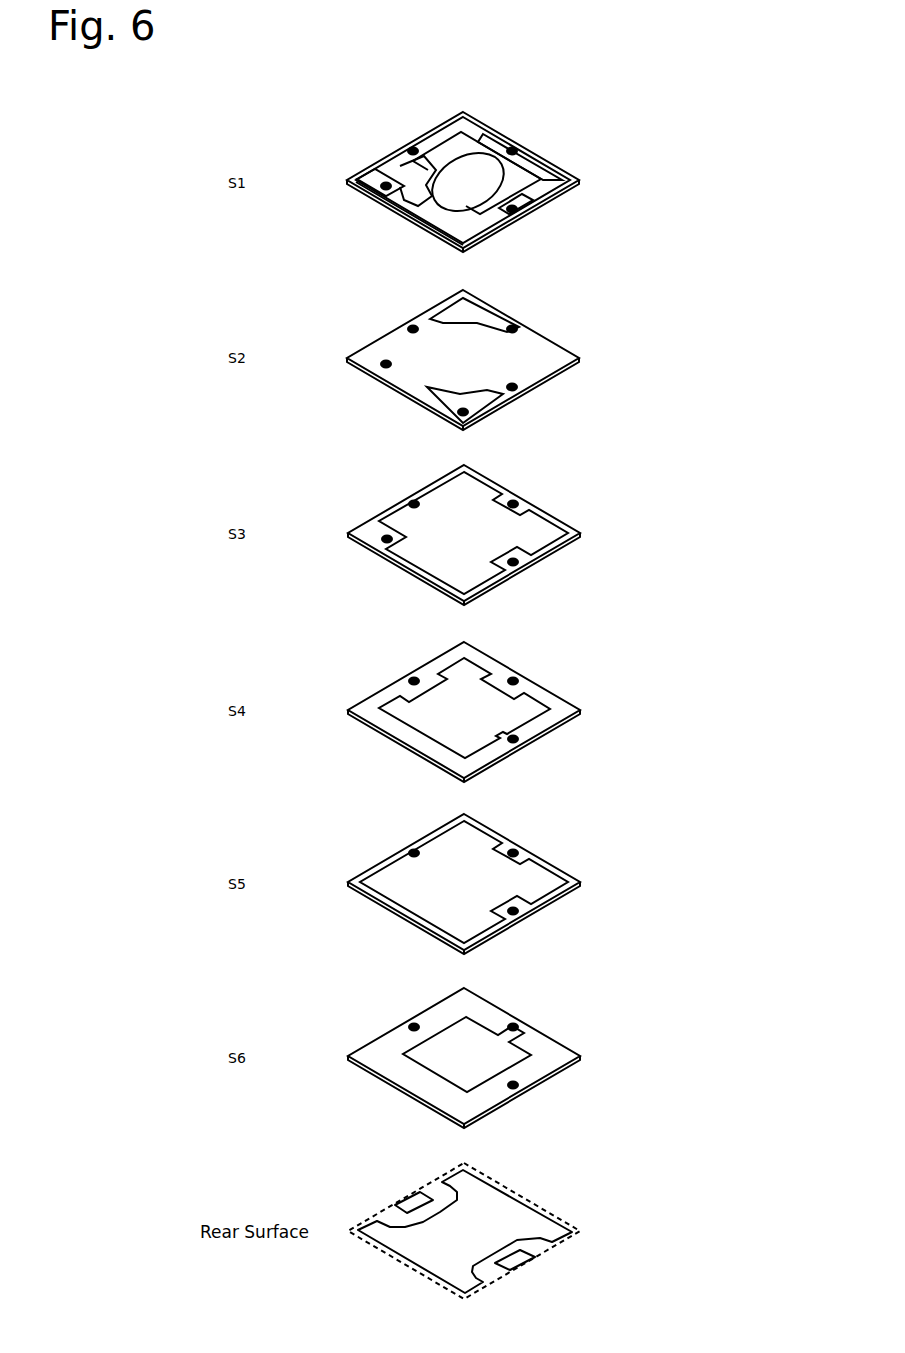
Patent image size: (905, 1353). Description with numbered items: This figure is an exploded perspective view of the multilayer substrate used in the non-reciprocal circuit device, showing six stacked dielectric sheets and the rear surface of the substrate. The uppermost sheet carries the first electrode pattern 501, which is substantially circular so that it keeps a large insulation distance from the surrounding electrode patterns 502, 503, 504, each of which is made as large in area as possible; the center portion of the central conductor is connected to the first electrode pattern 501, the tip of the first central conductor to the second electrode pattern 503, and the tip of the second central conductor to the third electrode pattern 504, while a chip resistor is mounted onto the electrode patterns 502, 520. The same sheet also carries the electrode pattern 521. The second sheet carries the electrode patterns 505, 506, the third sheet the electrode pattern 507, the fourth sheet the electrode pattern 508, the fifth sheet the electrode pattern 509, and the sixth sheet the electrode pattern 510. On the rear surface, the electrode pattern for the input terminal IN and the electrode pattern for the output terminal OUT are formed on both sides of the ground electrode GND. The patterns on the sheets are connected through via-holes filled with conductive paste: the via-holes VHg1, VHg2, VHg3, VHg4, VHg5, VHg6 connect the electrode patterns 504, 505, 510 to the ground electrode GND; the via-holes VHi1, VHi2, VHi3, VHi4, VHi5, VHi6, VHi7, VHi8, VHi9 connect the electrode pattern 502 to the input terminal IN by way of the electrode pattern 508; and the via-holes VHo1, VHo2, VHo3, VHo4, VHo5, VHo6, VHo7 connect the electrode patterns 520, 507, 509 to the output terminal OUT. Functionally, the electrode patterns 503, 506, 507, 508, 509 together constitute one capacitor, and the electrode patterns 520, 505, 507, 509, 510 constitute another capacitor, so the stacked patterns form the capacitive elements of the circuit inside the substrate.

The first electrode pattern 501 is at (385, 170).
The electrode pattern 502 is at (348, 187).
The second electrode pattern 503 is at (470, 206).
The third electrode pattern 504 is at (536, 151).
The electrode pattern 505 is at (477, 305).
The electrode pattern 506 is at (450, 417).
The electrode pattern 507 is at (473, 546).
The electrode pattern 508 is at (464, 728).
The electrode pattern 509 is at (464, 895).
The electrode pattern 510 is at (447, 1069).
The electrode pattern 520 is at (463, 167).
The electrode pattern 521 is at (404, 225).
The via-hole VHo1 is at (390, 137).
The via-hole VHg1 is at (531, 135).
The via-hole VHi1 is at (355, 211).
The via-hole VHi2 is at (540, 229).
The via-hole VHo2 is at (390, 314).
The via-hole VHg2 is at (535, 315).
The via-hole VHi3 is at (363, 389).
The via-hole VHi4 is at (542, 409).
The via-hole VHo3 is at (496, 434).
The via-hole VHo4 is at (390, 489).
The via-hole VHg3 is at (539, 491).
The via-hole VHi6 is at (363, 564).
The via-hole VHi5 is at (543, 584).
The via-hole VHo5 is at (390, 665).
The via-hole VHg4 is at (539, 668).
The via-hole VHi7 is at (543, 761).
The via-hole VHo6 is at (390, 837).
The via-hole VHg5 is at (539, 839).
The via-hole VHi8 is at (543, 932).
The via-hole VHo7 is at (390, 1011).
The via-hole VHg6 is at (537, 1013).
The via-hole VHi9 is at (543, 1108).
The output terminal OUT is at (400, 1188).
The ground electrode GND is at (465, 1244).
The input terminal IN is at (527, 1279).